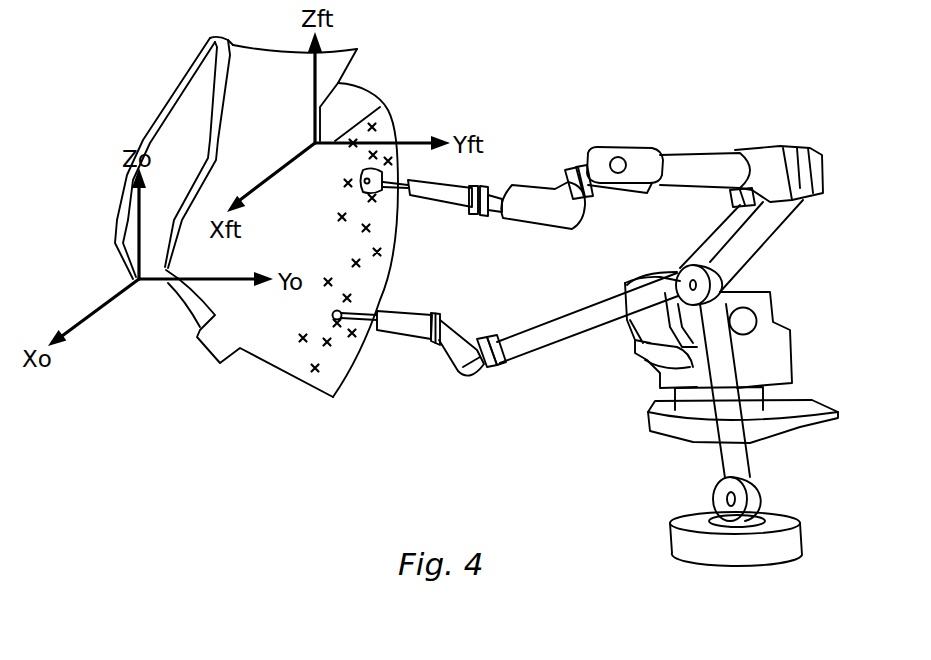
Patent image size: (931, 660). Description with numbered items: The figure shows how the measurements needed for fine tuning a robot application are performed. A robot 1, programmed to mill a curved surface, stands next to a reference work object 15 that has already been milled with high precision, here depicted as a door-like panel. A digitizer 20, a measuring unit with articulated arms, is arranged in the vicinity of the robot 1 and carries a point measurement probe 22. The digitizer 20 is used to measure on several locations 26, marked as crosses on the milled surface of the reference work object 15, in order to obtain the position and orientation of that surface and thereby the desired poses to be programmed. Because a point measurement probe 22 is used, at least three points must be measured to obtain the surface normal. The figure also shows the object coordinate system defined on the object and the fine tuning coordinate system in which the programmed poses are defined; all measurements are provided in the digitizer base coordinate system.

The robot 1 is at (822, 276).
The reference work object 15 is at (277, 352).
The digitizer 20 is at (563, 355).
The point measurement probe 22 is at (360, 313).
The locations 26 is at (331, 344).